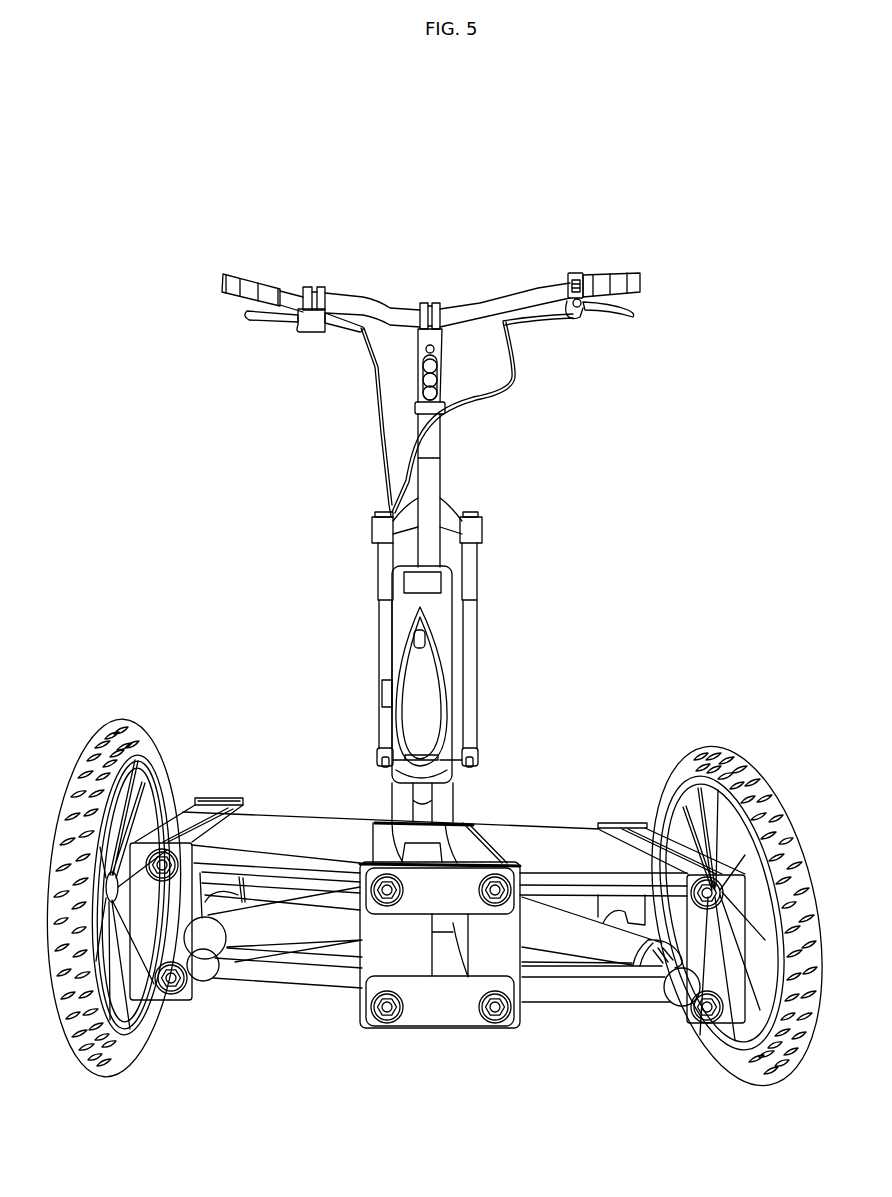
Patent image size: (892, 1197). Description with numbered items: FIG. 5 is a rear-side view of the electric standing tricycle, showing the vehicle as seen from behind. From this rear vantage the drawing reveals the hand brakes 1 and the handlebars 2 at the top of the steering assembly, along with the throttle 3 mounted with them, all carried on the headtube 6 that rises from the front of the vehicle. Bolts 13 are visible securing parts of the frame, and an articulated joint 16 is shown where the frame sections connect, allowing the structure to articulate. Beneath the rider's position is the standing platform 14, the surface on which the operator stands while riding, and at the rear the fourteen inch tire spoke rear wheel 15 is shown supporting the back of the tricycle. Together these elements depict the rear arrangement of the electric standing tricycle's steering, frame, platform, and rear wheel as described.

The hand brakes 1 is at (245, 317).
The handlebars 2 is at (645, 278).
The throttle 3 is at (571, 273).
The headtube 6 is at (393, 497).
The bolts 13 is at (393, 1027).
The standing platform 14 is at (553, 838).
The 14 inch tire spoke rear wheel 15 is at (150, 1033).
The articulated joint 16 is at (595, 988).